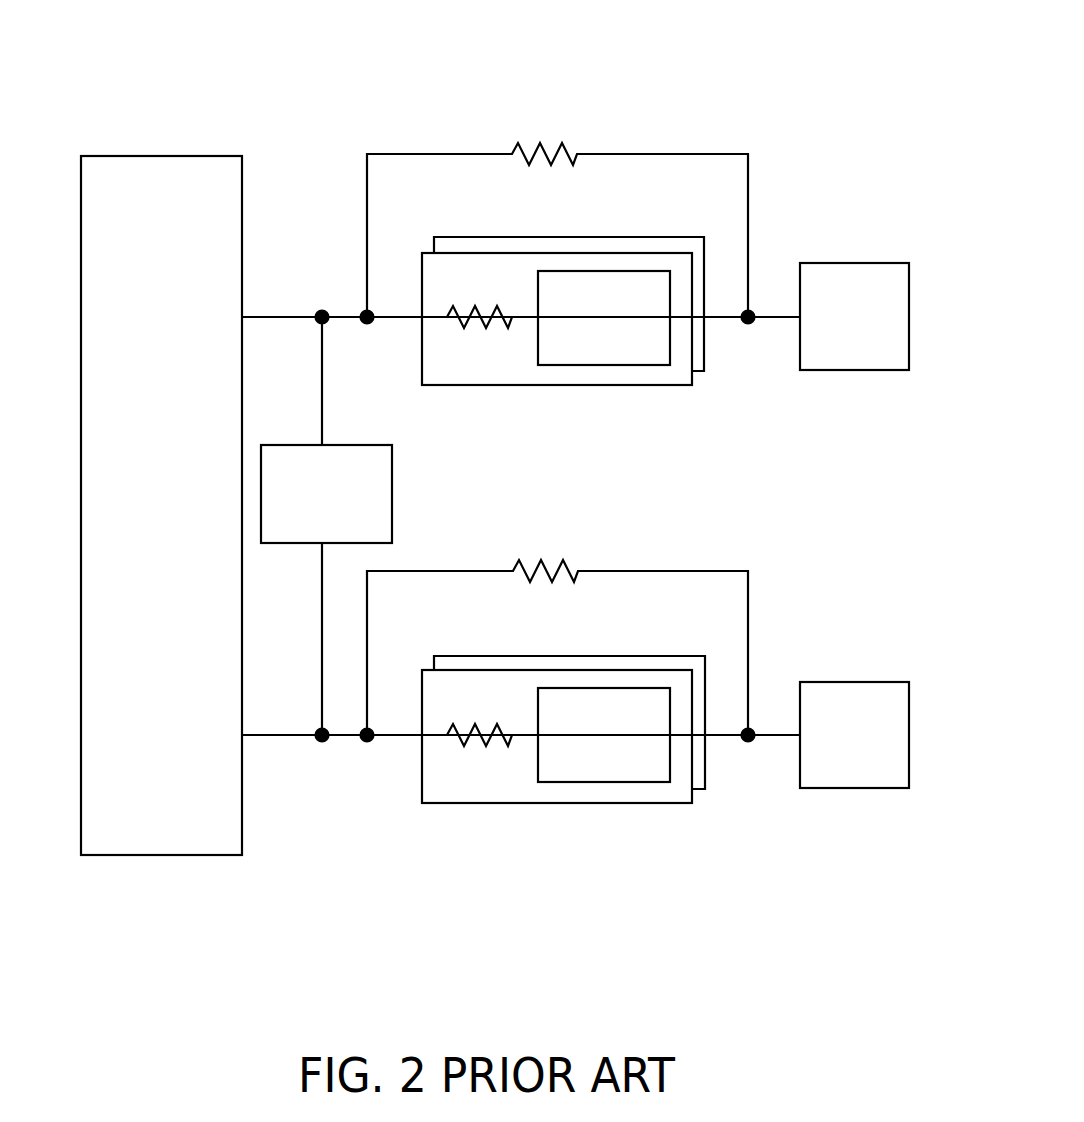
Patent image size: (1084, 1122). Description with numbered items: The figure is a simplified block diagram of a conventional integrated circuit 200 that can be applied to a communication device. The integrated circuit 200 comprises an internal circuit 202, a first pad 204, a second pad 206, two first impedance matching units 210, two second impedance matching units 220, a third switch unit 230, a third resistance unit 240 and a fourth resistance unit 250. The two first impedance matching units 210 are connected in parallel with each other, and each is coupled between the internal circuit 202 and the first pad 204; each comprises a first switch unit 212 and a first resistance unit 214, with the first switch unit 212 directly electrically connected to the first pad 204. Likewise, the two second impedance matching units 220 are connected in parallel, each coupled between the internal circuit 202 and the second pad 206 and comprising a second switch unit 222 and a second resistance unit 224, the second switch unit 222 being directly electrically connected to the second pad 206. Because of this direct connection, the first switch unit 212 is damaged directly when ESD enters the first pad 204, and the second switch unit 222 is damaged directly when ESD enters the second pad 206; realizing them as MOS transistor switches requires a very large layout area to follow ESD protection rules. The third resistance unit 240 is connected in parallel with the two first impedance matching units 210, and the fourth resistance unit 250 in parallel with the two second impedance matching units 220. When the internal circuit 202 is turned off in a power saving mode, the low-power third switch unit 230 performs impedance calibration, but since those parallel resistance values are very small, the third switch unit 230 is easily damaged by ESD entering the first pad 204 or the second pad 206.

The integrated circuit 200 is at (775, 60).
The internal circuit 202 is at (160, 156).
The first pad 204 is at (853, 263).
The second pad 206 is at (853, 682).
The first impedance matching unit 210 is at (575, 253).
The first switch unit 212 is at (606, 365).
The first resistance unit 214 is at (477, 330).
The second impedance matching unit 220 is at (575, 670).
The second switch unit 222 is at (612, 782).
The second resistance unit 224 is at (474, 750).
The third switch unit 230 is at (356, 444).
The third resistance unit 240 is at (550, 142).
The fourth resistance unit 250 is at (550, 560).